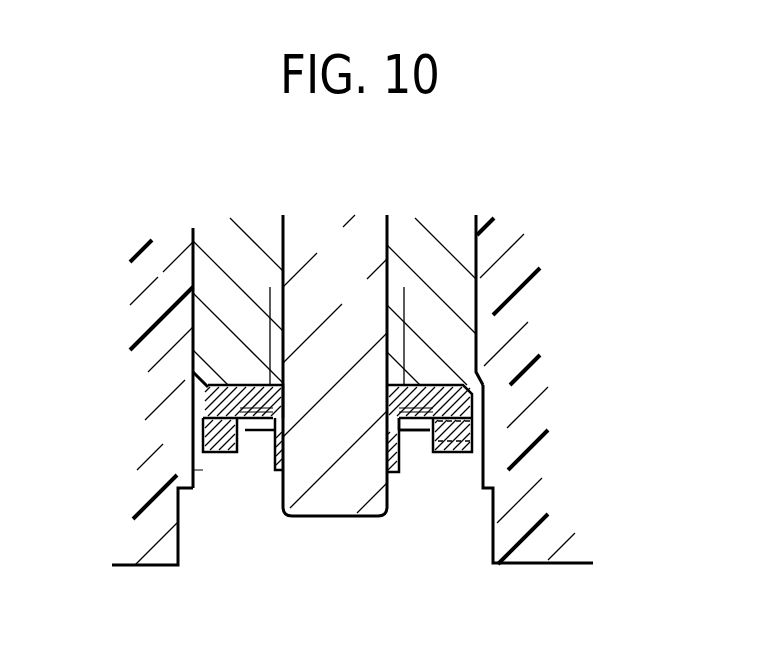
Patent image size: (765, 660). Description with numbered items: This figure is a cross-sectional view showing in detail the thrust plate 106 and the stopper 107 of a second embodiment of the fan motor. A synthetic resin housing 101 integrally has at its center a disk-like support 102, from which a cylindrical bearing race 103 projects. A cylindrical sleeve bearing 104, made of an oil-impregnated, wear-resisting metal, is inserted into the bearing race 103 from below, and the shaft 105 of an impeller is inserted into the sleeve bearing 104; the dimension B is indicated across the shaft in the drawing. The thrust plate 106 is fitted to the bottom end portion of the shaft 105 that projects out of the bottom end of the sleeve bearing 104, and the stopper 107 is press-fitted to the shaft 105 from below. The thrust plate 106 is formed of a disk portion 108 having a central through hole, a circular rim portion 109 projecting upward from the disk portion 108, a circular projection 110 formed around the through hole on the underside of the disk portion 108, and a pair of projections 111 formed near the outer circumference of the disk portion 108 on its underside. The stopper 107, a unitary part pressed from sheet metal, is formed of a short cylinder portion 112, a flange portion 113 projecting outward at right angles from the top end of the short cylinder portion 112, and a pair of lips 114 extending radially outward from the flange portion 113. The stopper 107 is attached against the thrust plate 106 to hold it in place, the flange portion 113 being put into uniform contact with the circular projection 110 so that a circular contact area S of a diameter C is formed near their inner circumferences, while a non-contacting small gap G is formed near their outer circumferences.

The synthetic resin housing 101 is at (512, 568).
The disk-like support 102 is at (566, 545).
The cylindrical bearing race 103 is at (175, 283).
The cylindrical sleeve bearing 104 is at (440, 255).
The shaft 105 is at (323, 519).
The thrust plate 106 is at (216, 455).
The stopper 107 is at (277, 483).
The disk portion 108 is at (423, 430).
The circular rim portion 109 is at (458, 388).
The circular projection 110 is at (400, 363).
The projections 111 is at (468, 447).
The short cylinder portion 112 is at (412, 442).
The flange portion 113 is at (423, 442).
The lips 114 is at (473, 442).
The shaft diameter B is at (386, 243).
The diameter C is at (403, 298).
The small gap G is at (230, 421).
The circular contact area S is at (274, 434).